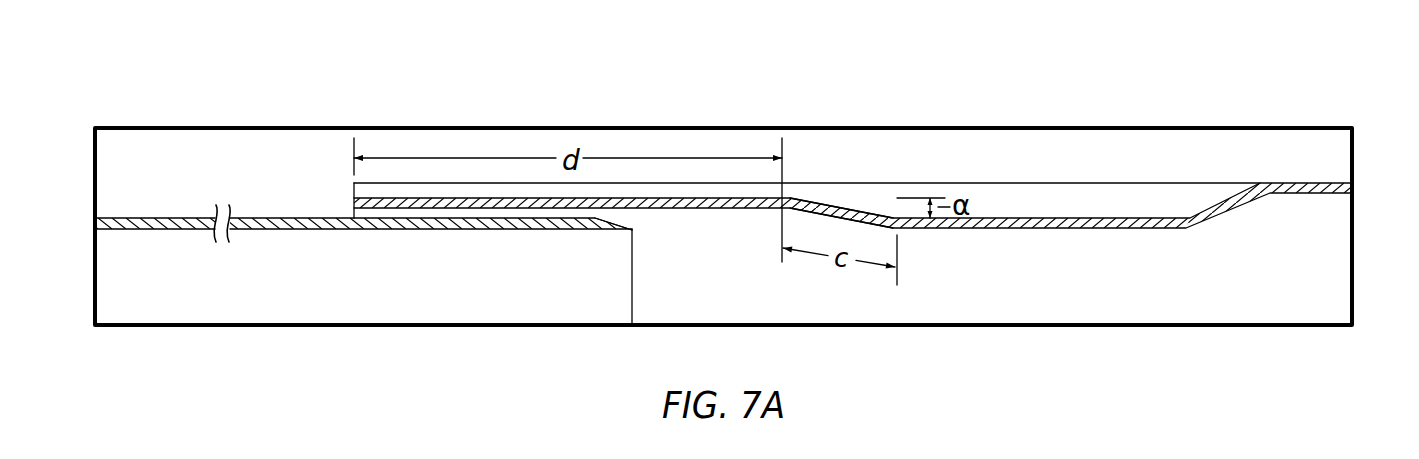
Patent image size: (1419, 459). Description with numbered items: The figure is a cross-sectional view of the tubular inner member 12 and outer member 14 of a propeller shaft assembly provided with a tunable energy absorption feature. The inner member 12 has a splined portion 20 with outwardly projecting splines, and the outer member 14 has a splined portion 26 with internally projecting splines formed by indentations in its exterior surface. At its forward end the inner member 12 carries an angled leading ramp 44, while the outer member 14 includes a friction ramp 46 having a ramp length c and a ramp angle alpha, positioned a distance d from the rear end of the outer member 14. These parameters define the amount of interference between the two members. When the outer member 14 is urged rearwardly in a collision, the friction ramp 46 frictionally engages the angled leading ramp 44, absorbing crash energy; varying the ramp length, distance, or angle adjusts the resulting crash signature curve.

The inner member 12 is at (160, 168).
The outer member 14 is at (1283, 155).
The splined portion 20 is at (310, 210).
The splined portion 26 is at (1033, 175).
The angled leading ramp 44 is at (607, 232).
The friction ramp 46 is at (825, 217).